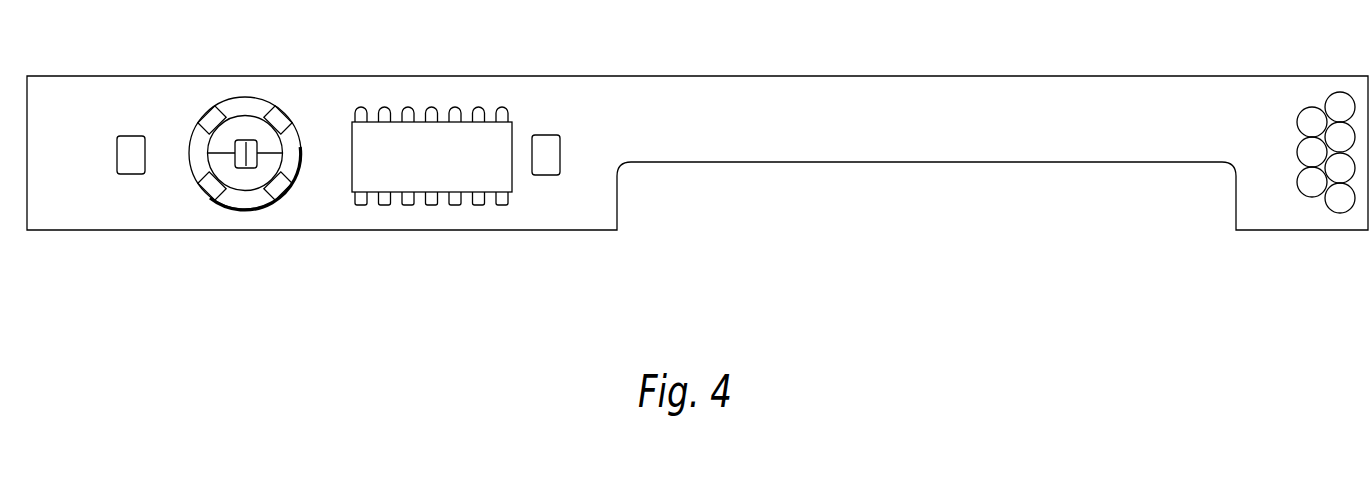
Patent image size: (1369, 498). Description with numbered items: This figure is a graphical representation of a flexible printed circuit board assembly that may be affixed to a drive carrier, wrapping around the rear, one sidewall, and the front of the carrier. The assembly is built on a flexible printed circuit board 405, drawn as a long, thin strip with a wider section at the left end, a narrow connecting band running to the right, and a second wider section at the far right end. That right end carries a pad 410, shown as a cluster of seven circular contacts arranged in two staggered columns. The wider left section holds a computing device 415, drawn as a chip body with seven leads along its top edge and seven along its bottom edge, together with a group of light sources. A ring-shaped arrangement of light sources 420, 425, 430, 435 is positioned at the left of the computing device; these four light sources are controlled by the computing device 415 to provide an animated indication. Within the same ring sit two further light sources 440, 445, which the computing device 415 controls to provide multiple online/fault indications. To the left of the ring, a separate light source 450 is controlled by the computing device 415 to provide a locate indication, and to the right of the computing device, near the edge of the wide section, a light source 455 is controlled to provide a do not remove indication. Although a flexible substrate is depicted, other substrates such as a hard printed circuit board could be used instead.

The flexible printed circuit board 405 is at (918, 100).
The pad 410 is at (1297, 194).
The computing device 415 is at (465, 175).
The light source 420 is at (275, 112).
The light source 425 is at (218, 113).
The light source 430 is at (207, 190).
The light source 435 is at (280, 192).
The light source 440 is at (235, 148).
The light source 445 is at (283, 140).
The light source 450 is at (133, 176).
The light source 455 is at (545, 135).